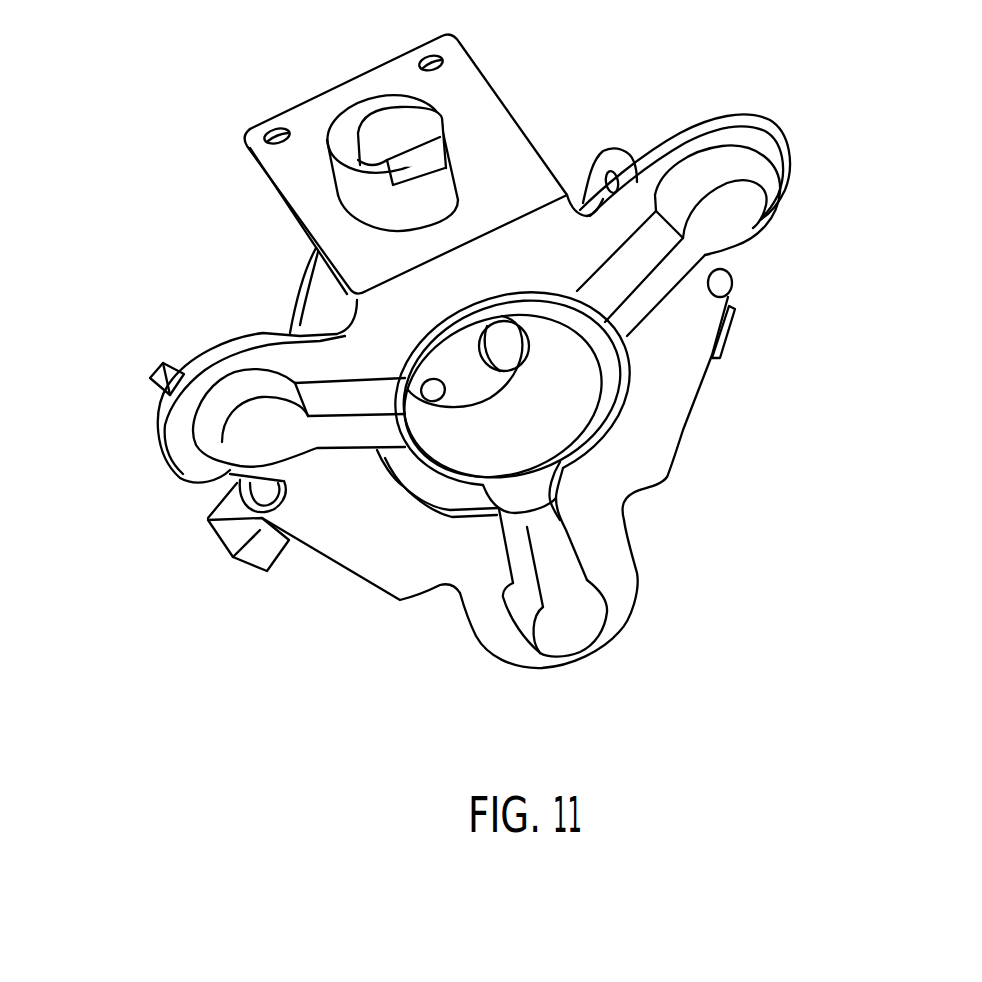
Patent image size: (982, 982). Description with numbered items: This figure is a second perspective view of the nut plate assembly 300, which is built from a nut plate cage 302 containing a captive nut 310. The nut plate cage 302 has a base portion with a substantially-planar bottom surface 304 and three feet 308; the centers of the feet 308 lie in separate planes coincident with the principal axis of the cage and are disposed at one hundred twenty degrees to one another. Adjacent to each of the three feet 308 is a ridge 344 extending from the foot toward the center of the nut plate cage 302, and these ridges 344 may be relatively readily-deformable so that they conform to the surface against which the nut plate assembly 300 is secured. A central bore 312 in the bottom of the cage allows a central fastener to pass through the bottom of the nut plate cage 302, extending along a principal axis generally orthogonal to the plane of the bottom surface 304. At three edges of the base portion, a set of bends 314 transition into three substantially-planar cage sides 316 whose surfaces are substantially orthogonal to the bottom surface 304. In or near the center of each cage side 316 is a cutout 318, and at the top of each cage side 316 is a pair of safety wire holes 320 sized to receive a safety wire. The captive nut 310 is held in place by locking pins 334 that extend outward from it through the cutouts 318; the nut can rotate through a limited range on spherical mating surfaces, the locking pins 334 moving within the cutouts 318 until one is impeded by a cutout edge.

The nut plate assembly 300 is at (122, 226).
The nut plate cage 302 is at (202, 365).
The bottom surface 304 is at (623, 577).
The feet 308 is at (742, 220).
The captive nut 310 is at (305, 315).
The central bore 312 is at (578, 452).
The bends 314 is at (534, 163).
The cage sides 316 is at (486, 95).
The cutout 318 is at (360, 98).
The safety wire holes 320 is at (258, 137).
The locking pins 334 is at (393, 125).
The ridge 344 is at (340, 437).